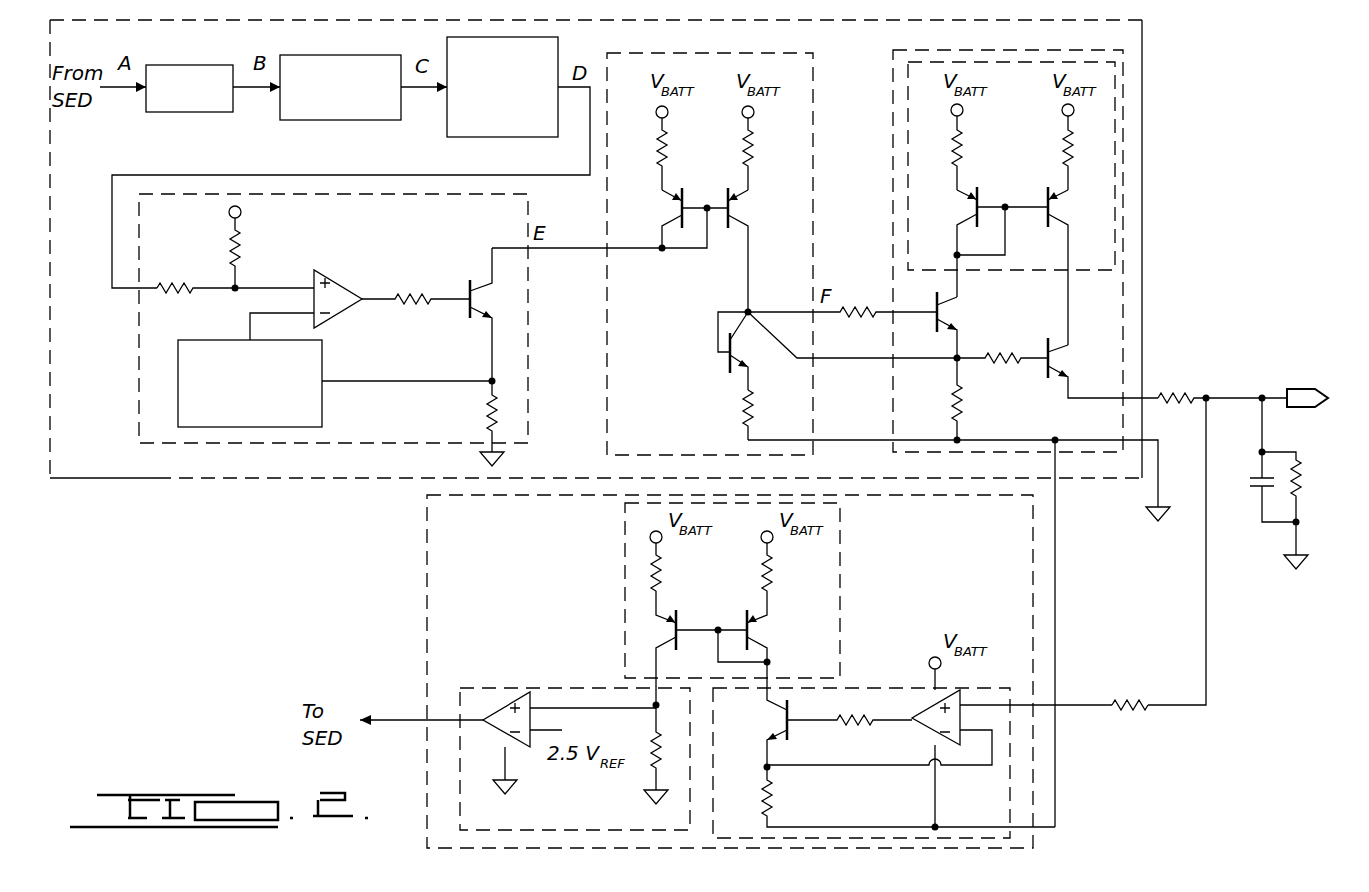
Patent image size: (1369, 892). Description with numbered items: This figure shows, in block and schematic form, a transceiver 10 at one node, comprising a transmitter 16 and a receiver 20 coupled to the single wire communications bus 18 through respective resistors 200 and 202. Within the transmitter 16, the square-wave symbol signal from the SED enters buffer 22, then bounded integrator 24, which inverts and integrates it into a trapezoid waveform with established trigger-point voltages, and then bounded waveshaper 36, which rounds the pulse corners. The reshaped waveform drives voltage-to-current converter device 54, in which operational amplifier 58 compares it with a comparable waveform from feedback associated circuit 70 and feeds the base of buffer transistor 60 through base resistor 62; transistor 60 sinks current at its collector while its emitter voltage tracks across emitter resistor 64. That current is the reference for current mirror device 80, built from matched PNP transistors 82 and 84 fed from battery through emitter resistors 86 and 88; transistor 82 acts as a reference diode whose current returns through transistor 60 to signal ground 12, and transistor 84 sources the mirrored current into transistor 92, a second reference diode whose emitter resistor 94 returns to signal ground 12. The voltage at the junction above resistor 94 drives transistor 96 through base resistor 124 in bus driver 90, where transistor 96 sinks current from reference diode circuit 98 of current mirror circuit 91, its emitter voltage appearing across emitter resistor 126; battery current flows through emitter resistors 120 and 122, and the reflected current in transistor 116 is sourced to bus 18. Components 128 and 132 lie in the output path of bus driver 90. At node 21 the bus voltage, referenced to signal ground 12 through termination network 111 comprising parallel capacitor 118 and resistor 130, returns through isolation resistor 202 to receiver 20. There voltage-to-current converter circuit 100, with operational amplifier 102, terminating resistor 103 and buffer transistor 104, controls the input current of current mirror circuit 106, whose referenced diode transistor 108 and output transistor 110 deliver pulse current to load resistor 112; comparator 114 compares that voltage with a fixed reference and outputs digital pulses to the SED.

The transceiver 10 is at (856, 467).
The signal ground 12 is at (503, 460).
The transmitter 16 is at (290, 483).
The communications bus 18 is at (1300, 395).
The receiver 20 is at (427, 545).
The node 21 is at (1202, 402).
The buffer 22 is at (163, 112).
The bounded integrator 24 is at (310, 120).
The bounded waveshaper 36 is at (447, 127).
The voltage-to-current converter device 54 is at (139, 408).
The operational amplifier 58 is at (340, 282).
The buffer transistor 60 is at (457, 314).
The base resistor 62 is at (418, 292).
The emitter resistor 64 is at (492, 412).
The feedback associated circuit 70 is at (322, 410).
The current mirror device 80 is at (813, 70).
The transistor 82 is at (680, 206).
The transistor 84 is at (740, 210).
The emitter resistor 86 is at (662, 148).
The emitter resistor 88 is at (748, 150).
The bus driver 90 is at (893, 170).
The current mirror circuit 91 is at (1085, 270).
The transistor 92 is at (735, 355).
The emitter resistor 94 is at (748, 410).
The transistor 96 is at (945, 305).
The reference diode circuit 98 is at (972, 212).
The voltage-to-current converter circuit 100 is at (865, 688).
The operational amplifier 102 is at (925, 722).
The terminating resistor 103 is at (775, 800).
The buffer transistor 104 is at (783, 722).
The current mirror circuit 106 is at (840, 550).
The referenced diode transistor 108 is at (757, 628).
The output transistor 110 is at (678, 625).
The termination network 111 is at (475, 688).
The load resistor 112 is at (650, 770).
The comparator 114 is at (525, 702).
The transistor 116 is at (1045, 225).
The capacitor 118 is at (1258, 480).
The emitter resistor 120 is at (965, 148).
The emitter resistor 122 is at (1062, 148).
The base resistor 124 is at (858, 300).
The emitter resistor 126 is at (957, 410).
The resistor 128 is at (1000, 350).
The resistor 130 is at (1300, 478).
The transistor 132 is at (1045, 372).
The resistor 200 is at (1170, 395).
The isolation resistor 202 is at (1130, 685).